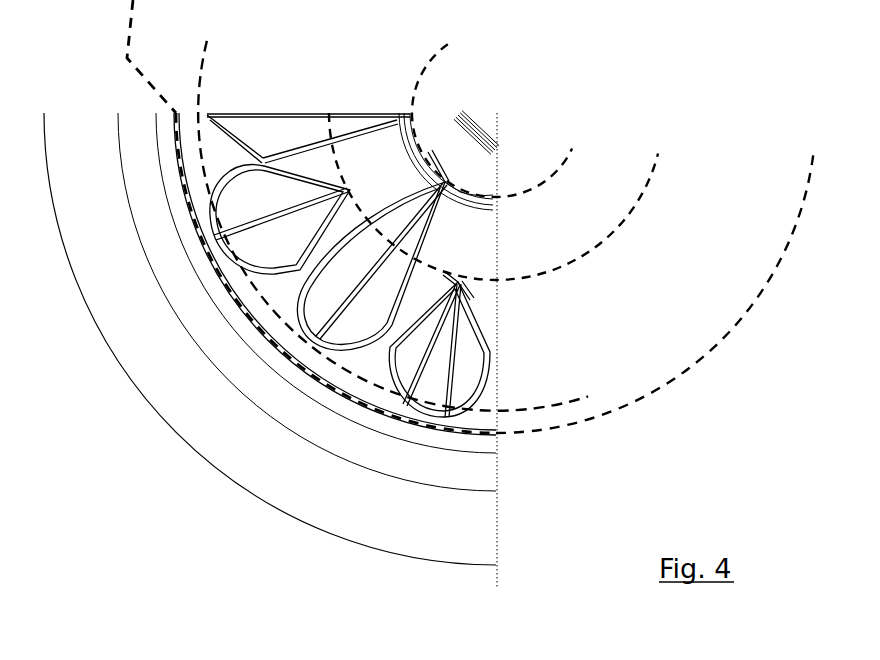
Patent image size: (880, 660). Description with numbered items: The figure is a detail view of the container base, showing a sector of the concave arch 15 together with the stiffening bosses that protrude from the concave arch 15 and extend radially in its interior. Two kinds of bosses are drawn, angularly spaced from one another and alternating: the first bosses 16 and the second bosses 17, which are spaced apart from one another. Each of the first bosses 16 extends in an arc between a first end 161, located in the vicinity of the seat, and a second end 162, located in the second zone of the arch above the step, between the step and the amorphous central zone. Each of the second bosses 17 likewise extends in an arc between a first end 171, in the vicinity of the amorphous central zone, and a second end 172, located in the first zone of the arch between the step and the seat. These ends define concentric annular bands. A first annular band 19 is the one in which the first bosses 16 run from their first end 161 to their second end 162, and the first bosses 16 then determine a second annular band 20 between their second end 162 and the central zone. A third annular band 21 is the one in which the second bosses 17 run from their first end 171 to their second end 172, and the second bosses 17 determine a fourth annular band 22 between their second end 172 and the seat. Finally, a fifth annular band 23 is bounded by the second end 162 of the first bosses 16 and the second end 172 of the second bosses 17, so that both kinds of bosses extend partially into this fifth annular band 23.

The concave arch 15 is at (222, 167).
The first bosses 16 is at (262, 253).
The second bosses 17 is at (353, 332).
The first end 161 is at (419, 436).
The second end 162 is at (463, 283).
The first end 171 is at (449, 181).
The second end 172 is at (298, 343).
The first annular band 19 is at (709, 268).
The second annular band 20 is at (551, 248).
The third annular band 21 is at (336, 95).
The fourth annular band 22 is at (176, 63).
The fifth annular band 23 is at (544, 358).